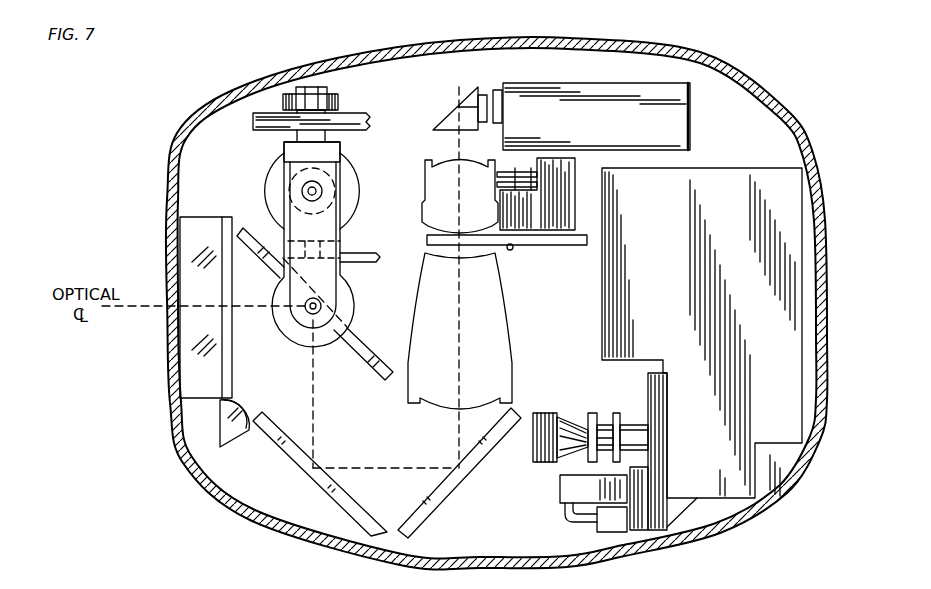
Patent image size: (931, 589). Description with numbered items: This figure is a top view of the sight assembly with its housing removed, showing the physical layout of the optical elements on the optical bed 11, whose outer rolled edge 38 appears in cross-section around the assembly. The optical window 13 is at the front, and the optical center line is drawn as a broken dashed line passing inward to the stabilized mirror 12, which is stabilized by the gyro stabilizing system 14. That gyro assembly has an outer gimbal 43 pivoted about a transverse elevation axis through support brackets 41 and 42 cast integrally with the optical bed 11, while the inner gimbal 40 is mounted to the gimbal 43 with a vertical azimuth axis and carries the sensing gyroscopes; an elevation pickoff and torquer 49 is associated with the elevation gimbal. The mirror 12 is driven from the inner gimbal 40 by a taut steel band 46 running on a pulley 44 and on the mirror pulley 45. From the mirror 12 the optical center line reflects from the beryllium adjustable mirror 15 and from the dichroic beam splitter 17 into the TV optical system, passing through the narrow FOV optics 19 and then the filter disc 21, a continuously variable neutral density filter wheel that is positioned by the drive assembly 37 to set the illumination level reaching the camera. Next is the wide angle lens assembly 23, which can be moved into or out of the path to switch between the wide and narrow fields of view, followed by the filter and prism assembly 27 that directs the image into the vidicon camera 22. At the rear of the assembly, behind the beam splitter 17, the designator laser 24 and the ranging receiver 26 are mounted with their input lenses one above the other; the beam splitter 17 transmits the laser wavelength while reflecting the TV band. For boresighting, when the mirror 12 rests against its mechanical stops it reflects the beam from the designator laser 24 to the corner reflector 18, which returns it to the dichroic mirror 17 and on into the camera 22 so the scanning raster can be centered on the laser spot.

The optical bed 11 is at (428, 77).
The stabilized mirror 12 is at (373, 350).
The optical window 13 is at (228, 322).
The gyro stabilizing system 14 is at (378, 118).
The adjustable mirror 15 is at (296, 458).
The dichroic beam splitter 17 is at (493, 448).
The corner reflector 18 is at (238, 433).
The narrow FOV optics 19 is at (508, 380).
The filter disc 21 is at (567, 247).
The vidicon camera 22 is at (688, 134).
The wide angle lens assembly 23 is at (427, 170).
The designator laser 24 is at (568, 413).
The ranging receiver 26 is at (793, 310).
The filter and prism assembly 27 is at (452, 102).
The drive assembly 37 is at (572, 197).
The outer rolled edge 38 is at (748, 82).
The inner gimbal 40 is at (273, 182).
The support bracket 41 is at (345, 113).
The support bracket 42 is at (355, 262).
The gimbal 43 is at (286, 148).
The pulley 44 is at (331, 204).
The mirror pulley 45 is at (288, 332).
The taut steel band 46 is at (340, 250).
The elevation pickoff and torquer 49 is at (310, 92).